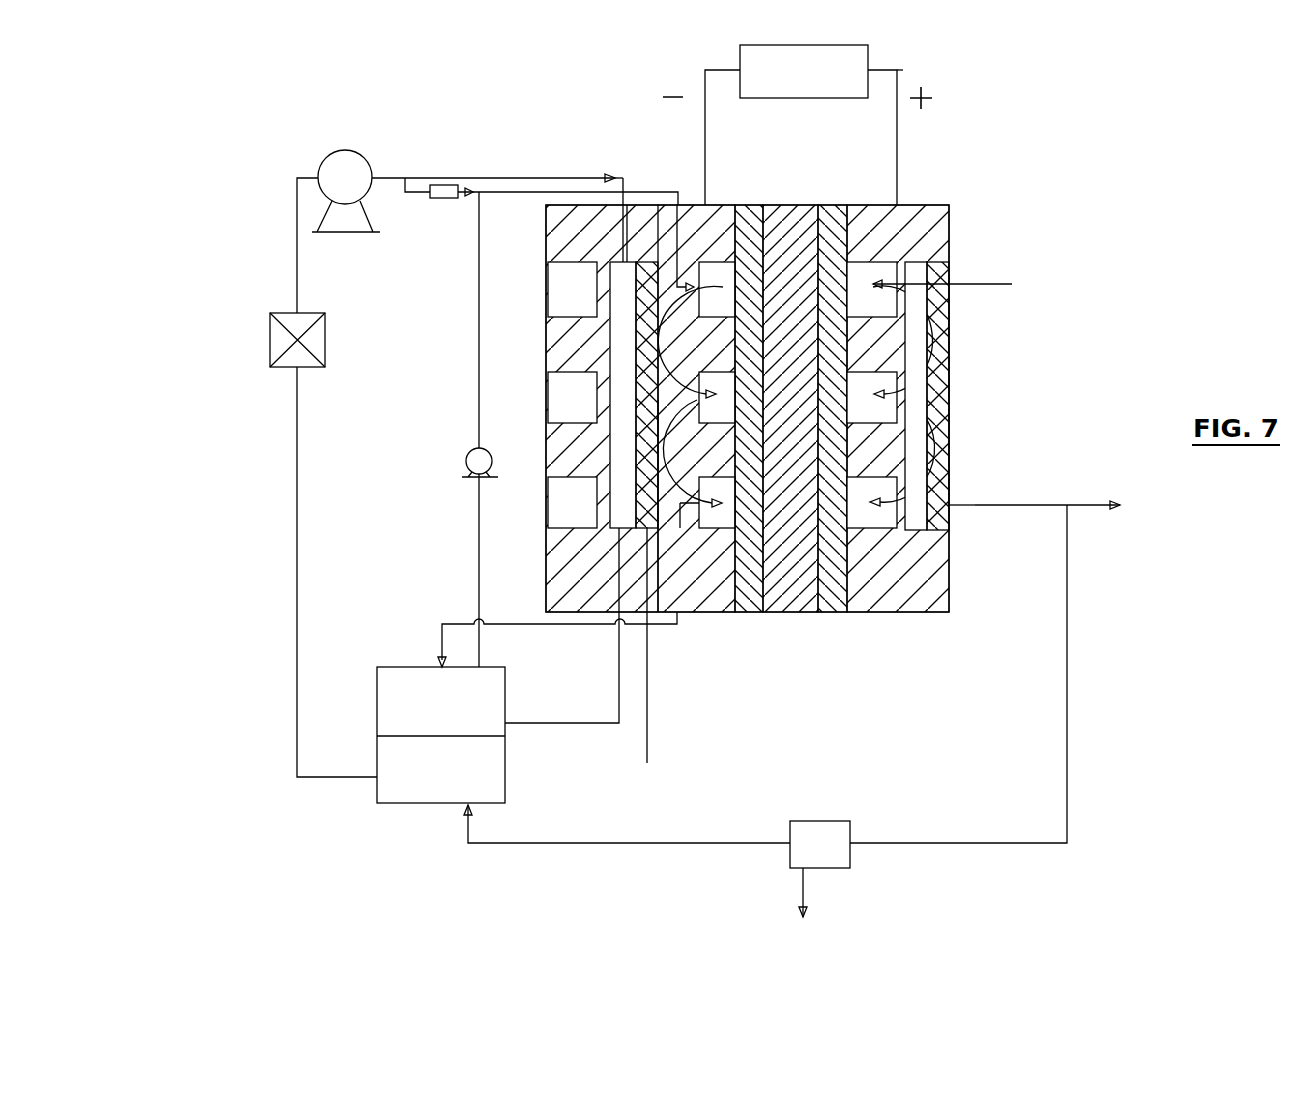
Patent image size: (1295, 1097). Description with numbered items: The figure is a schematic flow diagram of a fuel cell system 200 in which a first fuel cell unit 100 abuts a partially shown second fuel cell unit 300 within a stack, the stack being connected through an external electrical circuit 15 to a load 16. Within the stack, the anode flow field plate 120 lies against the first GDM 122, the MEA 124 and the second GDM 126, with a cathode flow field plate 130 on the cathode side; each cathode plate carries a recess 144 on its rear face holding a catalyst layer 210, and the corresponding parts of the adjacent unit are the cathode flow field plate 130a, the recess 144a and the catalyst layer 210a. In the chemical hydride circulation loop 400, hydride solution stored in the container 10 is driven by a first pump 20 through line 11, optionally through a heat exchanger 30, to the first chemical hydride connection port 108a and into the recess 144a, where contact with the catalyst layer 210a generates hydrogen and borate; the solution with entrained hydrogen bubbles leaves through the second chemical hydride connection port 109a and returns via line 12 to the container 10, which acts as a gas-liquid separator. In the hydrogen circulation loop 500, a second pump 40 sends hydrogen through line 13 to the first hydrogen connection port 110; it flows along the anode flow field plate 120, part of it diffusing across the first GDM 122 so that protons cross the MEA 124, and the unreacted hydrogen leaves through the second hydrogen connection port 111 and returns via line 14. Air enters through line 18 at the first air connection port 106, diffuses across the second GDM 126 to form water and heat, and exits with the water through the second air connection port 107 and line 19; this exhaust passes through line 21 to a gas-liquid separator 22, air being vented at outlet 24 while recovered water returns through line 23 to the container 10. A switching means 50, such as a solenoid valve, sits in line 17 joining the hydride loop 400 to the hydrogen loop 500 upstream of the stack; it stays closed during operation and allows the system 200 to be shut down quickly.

The container 10 is at (505, 780).
The line 11 is at (296, 550).
The line 12 is at (573, 725).
The line 13 is at (479, 548).
The line 14 is at (550, 628).
The external electrical circuit 15 is at (903, 70).
The load 16 is at (815, 100).
The line 17 is at (405, 200).
The line 18 is at (1003, 286).
The line 19 is at (1005, 508).
The first pump 20 is at (352, 158).
The line 21 is at (1067, 655).
The gas-liquid separator 22 is at (830, 820).
The line 23 is at (650, 845).
The vent or outlet 24 is at (805, 895).
The heat exchanger 30 is at (268, 337).
The second pump 40 is at (466, 458).
The switching means 50 is at (450, 200).
The first fuel cell unit 100 is at (797, 458).
The first air connection port 106 is at (950, 284).
The second air connection port 107 is at (950, 503).
The first chemical hydride connection port 108a is at (623, 188).
The second chemical hydride connection port 109a is at (627, 707).
The first hydrogen connection port 110 is at (683, 205).
The second hydrogen connection port 111 is at (682, 617).
The anode flow field plate 120 is at (787, 449).
The first GDM 122 is at (740, 615).
The MEA 124 is at (807, 615).
The second GDM 126 is at (827, 615).
The cathode flow field plate 130 is at (948, 613).
The cathode flow field plate 130a is at (543, 553).
The recess 144 is at (940, 413).
The recess 144a is at (620, 447).
The fuel cell system 200 is at (796, 420).
The catalyst layer 210 is at (950, 355).
The catalyst layer 210a is at (632, 378).
The second fuel cell unit 300 is at (527, 713).
The chemical hydride circulation loop 400 is at (431, 436).
The hydrogen circulation loop 500 is at (444, 429).